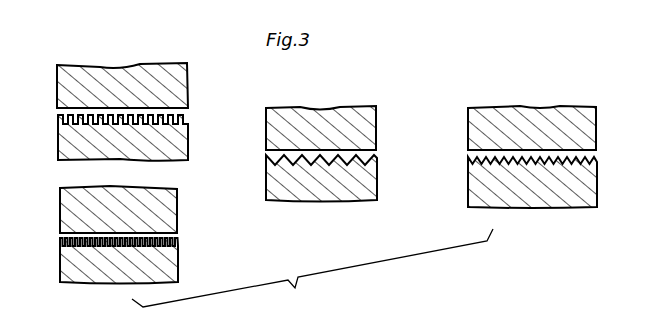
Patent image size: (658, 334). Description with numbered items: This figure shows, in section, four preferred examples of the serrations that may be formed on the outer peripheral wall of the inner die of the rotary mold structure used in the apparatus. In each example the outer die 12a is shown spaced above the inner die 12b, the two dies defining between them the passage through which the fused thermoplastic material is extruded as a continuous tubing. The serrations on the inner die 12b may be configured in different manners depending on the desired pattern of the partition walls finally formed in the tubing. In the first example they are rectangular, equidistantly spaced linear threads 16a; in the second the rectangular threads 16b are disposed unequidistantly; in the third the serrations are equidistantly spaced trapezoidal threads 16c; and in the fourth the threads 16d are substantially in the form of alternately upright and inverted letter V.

The outer die 12a is at (150, 72).
The inner die 12b is at (175, 159).
The rectangular equidistantly spaced linear threads 16a is at (145, 108).
The unequidistantly disposed rectangular threads 16b is at (178, 240).
The equidistantly spaced trapezoidal threads 16c is at (376, 153).
The alternately upright and inverted V-shaped threads 16d is at (597, 155).